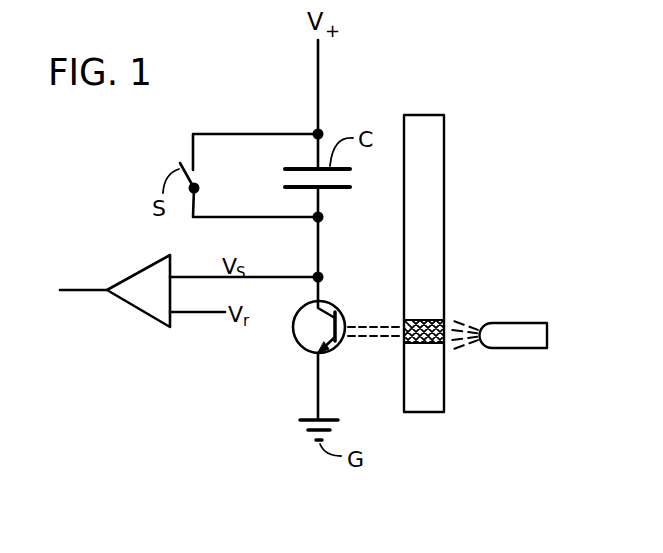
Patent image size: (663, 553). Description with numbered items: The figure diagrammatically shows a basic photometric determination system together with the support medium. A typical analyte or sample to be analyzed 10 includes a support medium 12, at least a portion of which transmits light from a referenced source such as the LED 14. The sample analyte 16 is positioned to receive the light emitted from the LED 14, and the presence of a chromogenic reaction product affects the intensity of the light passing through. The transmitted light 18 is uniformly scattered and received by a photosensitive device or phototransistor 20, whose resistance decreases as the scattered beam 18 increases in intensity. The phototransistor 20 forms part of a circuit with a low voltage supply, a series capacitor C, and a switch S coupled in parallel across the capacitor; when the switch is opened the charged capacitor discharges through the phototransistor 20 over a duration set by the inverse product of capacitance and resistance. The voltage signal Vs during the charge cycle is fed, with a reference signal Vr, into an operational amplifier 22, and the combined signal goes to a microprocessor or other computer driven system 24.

The analyte or sample to be analyzed 10 is at (450, 171).
The support medium 12 is at (444, 230).
The LED 14 is at (510, 322).
The sample analyte 16 is at (425, 345).
The transmitted light / scattered beam 18 is at (363, 327).
The phototransistor 20 is at (293, 333).
The operational amplifier 22 is at (145, 300).
The microprocessor or other computer driven system 24 is at (70, 287).